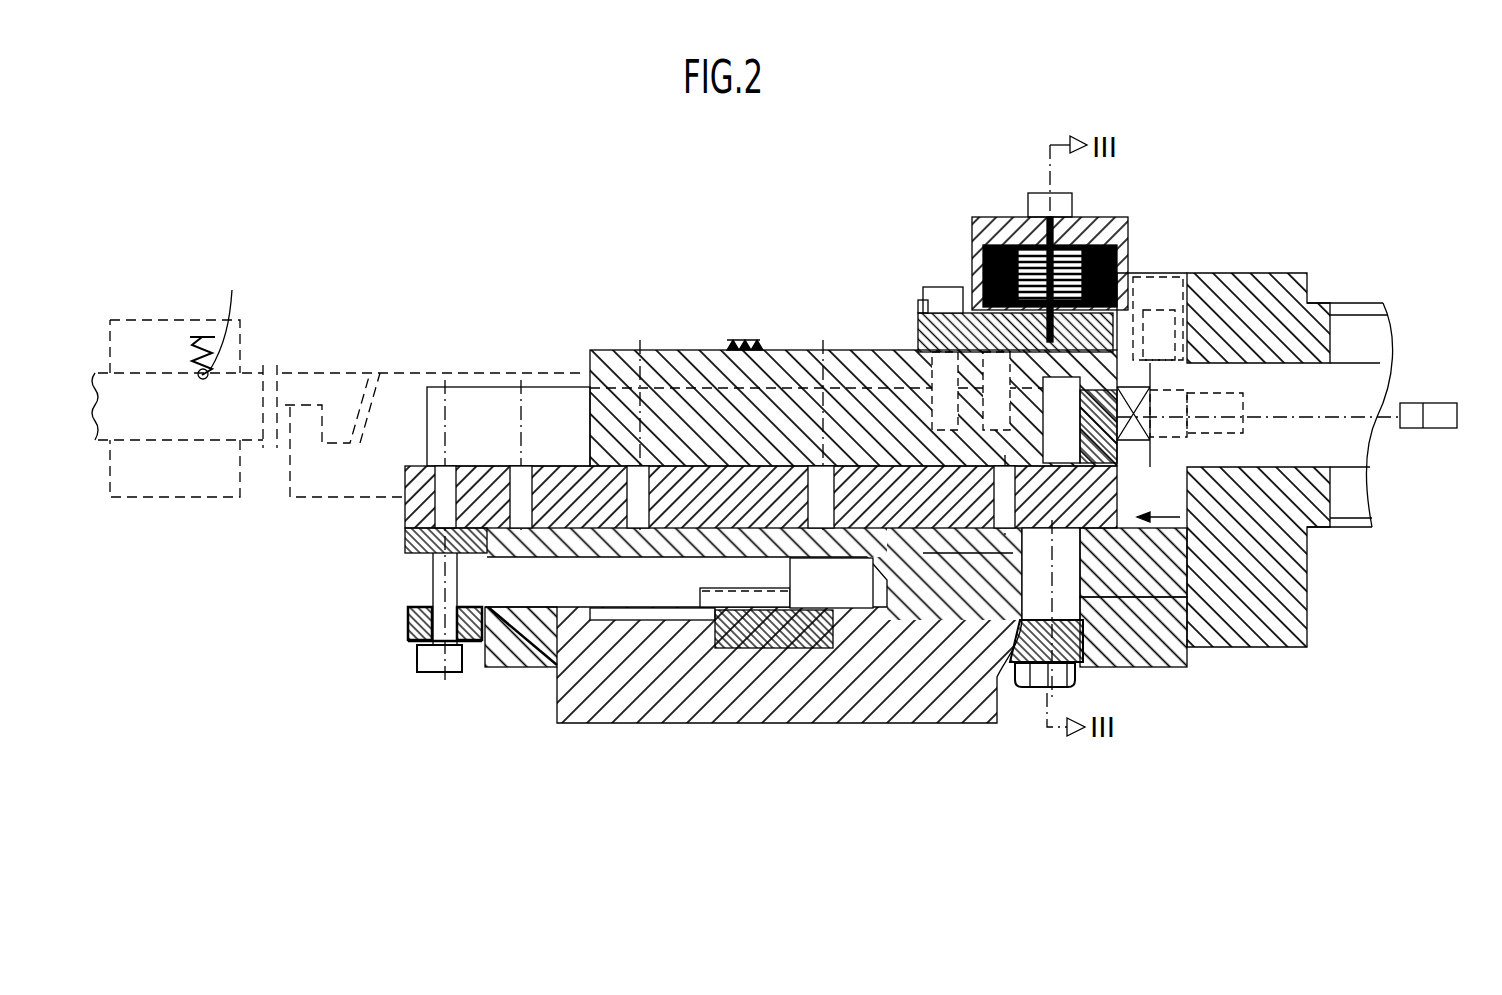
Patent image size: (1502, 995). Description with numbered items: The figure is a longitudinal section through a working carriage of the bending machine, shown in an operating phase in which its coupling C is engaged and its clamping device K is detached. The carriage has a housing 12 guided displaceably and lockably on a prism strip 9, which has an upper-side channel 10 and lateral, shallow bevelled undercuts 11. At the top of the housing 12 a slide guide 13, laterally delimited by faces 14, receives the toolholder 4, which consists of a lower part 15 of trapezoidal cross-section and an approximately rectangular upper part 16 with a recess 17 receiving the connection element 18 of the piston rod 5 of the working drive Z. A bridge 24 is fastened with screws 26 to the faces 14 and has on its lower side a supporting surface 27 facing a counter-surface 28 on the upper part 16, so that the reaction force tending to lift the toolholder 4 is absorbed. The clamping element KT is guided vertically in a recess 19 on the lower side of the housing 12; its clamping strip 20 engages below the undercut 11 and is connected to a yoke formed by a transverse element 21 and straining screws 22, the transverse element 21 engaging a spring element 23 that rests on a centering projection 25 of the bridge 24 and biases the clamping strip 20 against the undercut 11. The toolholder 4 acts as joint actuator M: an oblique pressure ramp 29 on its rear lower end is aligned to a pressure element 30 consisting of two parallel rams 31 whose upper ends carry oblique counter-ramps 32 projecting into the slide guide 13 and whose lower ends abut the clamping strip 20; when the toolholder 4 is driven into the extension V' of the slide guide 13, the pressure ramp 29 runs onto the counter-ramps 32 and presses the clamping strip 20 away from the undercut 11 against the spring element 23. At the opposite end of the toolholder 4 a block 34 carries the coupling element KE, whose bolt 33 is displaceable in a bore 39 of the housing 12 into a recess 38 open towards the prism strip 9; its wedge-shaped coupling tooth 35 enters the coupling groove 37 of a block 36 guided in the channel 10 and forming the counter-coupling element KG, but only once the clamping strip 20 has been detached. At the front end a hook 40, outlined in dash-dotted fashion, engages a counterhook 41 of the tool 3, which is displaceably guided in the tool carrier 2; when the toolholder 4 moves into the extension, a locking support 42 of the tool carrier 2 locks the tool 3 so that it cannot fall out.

The tool carrier 2 is at (162, 333).
The locking support 42 is at (231, 312).
The tool 3 is at (306, 373).
The counterhook 41 is at (343, 413).
The hook 40 is at (410, 393).
The faces 14 is at (497, 417).
The bore 39 is at (563, 463).
The toolholder 4 is at (611, 344).
The upper part 16 is at (708, 350).
The counter-surface 28 is at (800, 348).
The bridge 24 is at (918, 322).
The screws 26 is at (930, 298).
The supporting surface 27 is at (953, 300).
The spring element 23 is at (982, 247).
The centering projection 25 is at (1003, 213).
The straining screws 22 is at (1030, 207).
The transverse element 21 is at (1128, 222).
The recess 17 is at (1067, 430).
The connection element 18 is at (1113, 333).
The piston rod 5 is at (1243, 410).
The lower part 15 is at (403, 508).
The block 34 is at (405, 547).
The bolt 33 is at (453, 672).
The housing 12 is at (513, 640).
The prism strip 9 is at (587, 708).
The coupling tooth 35 is at (687, 703).
The block 36 is at (720, 703).
The upper-side channel 10 is at (810, 600).
The coupling groove 37 is at (830, 605).
The recess 38 is at (827, 620).
The slide guide 13 is at (900, 553).
The undercuts 11 is at (997, 680).
The pressure ramp 29 is at (1090, 523).
The counter-ramps 32 is at (1180, 560).
The pressure element 30 is at (1180, 600).
The rams 31 is at (1187, 665).
The clamping strip 20 is at (1080, 668).
The recess 19 is at (1083, 645).